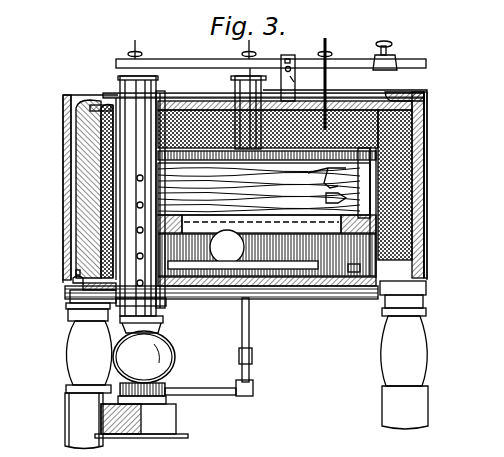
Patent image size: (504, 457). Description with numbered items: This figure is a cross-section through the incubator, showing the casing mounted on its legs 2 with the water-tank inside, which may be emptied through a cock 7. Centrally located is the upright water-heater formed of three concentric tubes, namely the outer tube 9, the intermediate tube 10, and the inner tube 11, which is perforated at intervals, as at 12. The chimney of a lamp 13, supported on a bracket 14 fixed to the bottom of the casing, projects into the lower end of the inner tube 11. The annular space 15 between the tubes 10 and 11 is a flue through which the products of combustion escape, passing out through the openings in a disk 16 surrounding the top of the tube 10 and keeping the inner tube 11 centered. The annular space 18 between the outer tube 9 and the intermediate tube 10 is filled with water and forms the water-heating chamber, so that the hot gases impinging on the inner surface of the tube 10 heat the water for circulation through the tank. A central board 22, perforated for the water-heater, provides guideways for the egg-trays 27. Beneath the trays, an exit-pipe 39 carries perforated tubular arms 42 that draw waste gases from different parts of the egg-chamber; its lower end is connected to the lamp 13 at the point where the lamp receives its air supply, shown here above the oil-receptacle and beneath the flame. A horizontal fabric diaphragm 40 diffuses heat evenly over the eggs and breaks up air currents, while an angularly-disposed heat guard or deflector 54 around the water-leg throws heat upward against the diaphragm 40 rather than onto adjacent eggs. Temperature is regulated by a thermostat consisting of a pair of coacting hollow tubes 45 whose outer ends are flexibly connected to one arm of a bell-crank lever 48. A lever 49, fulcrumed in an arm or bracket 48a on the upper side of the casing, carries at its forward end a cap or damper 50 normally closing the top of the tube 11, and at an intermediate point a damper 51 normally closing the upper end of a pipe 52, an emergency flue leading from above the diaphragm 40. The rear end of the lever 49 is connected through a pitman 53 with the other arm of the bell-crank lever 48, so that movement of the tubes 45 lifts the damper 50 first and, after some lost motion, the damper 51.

The legs 2 is at (72, 408).
The cock 7 is at (62, 288).
The outer tube 9 is at (95, 138).
The intermediate tube 10 is at (73, 196).
The inner tube 11 is at (108, 254).
The perforations 12 is at (92, 172).
The lamp 13 is at (169, 405).
The bracket 14 is at (150, 430).
The annular space 15 is at (92, 214).
The disk 16 is at (112, 84).
The annular space 18 is at (66, 270).
The board 22 is at (160, 292).
The egg-trays 27 is at (154, 304).
The exit-pipe 39 is at (234, 320).
The diaphragm 40 is at (345, 137).
The perforated tubular arms 42 is at (260, 236).
The hollow tubes 45 is at (288, 214).
The bell-crank lever 48 is at (348, 189).
The arm or bracket 48a is at (282, 70).
The lever 49 is at (166, 60).
The cap or damper 50 is at (150, 74).
The damper 51 is at (274, 60).
The pipe 52 is at (227, 81).
The pitman 53 is at (320, 71).
The heat guard or deflector 54 is at (348, 162).